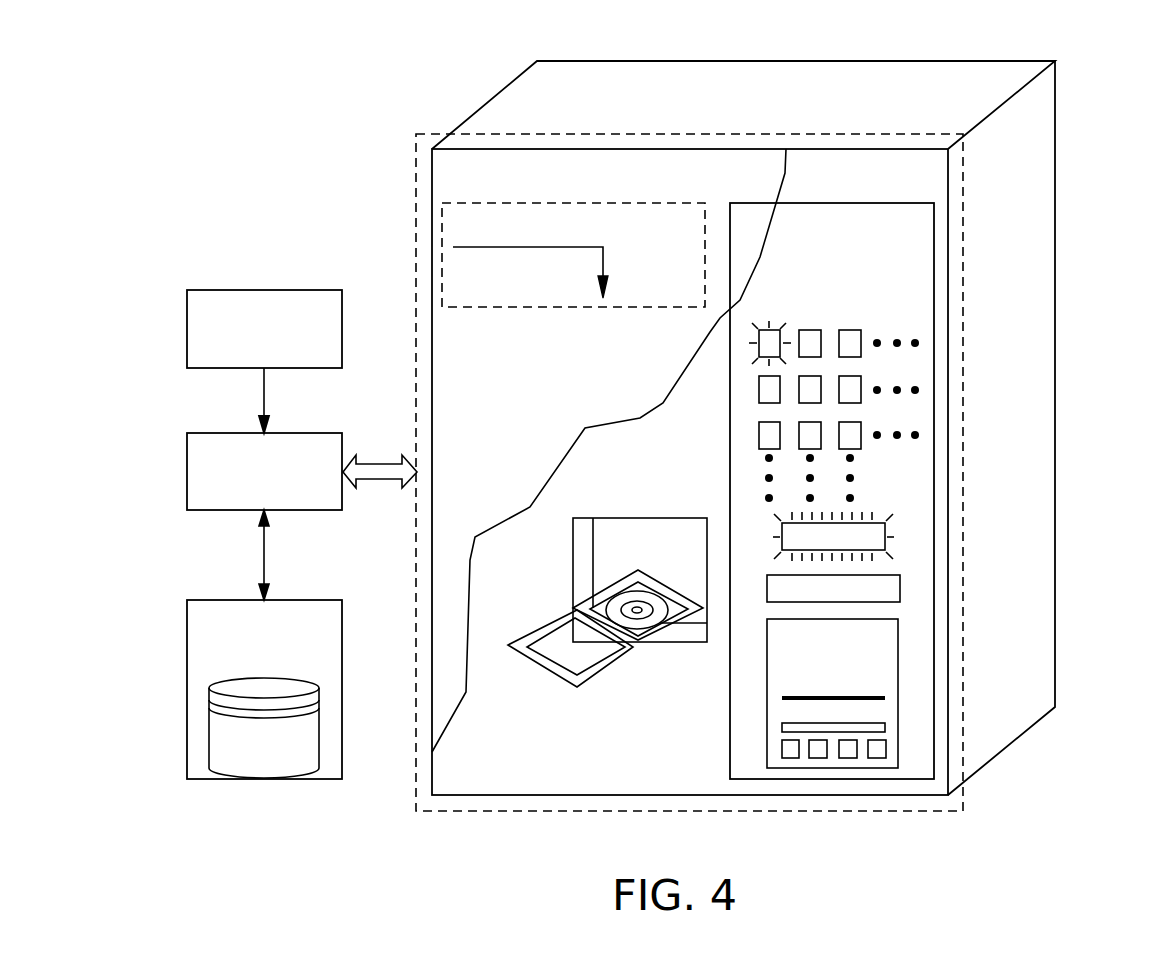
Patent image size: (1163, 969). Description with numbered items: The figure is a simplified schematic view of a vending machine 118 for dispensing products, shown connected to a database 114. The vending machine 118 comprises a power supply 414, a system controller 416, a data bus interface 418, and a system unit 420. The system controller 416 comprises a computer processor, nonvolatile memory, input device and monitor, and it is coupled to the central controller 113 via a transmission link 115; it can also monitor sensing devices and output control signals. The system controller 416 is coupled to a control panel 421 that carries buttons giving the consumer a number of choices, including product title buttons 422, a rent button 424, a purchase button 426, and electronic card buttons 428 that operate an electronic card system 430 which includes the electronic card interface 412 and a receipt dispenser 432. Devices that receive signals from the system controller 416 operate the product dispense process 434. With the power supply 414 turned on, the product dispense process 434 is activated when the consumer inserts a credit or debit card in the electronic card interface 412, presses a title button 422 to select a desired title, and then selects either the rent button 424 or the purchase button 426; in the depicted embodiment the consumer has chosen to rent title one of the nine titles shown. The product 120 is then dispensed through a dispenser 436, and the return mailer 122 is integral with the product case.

The vending machine 118 is at (1088, 108).
The system unit 420 is at (416, 186).
The product dispense process 434 is at (575, 203).
The control panel 421 is at (832, 203).
The product title buttons 422 is at (779, 330).
The rent button 424 is at (885, 522).
The purchase button 426 is at (898, 574).
The electronic card system 430 is at (897, 618).
The receipt dispenser 432 is at (871, 698).
The electronic card interface 412 is at (885, 727).
The electronic card buttons 428 is at (877, 758).
The dispenser 436 is at (640, 518).
The product 120 is at (600, 600).
The return mailer 122 is at (567, 652).
The power supply 414 is at (295, 290).
The system controller 416 is at (295, 433).
The data bus interface 418 is at (380, 481).
The transmission link 115 is at (262, 555).
The central controller 113 is at (295, 600).
The database 114 is at (288, 774).